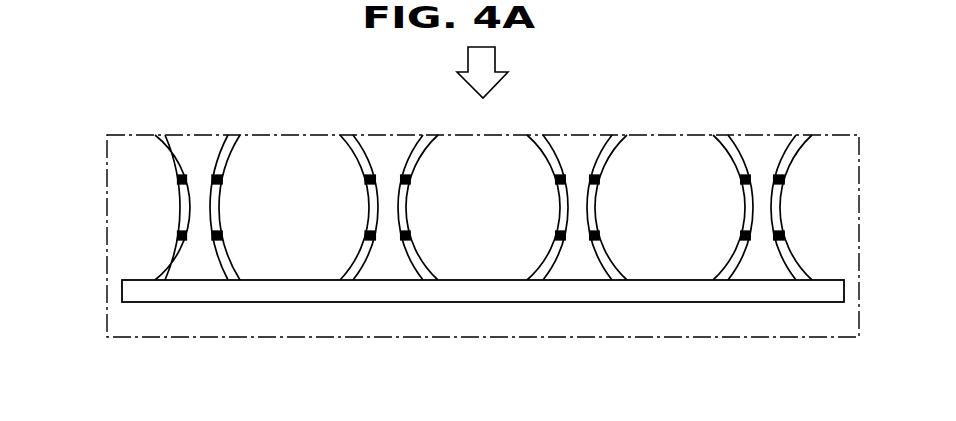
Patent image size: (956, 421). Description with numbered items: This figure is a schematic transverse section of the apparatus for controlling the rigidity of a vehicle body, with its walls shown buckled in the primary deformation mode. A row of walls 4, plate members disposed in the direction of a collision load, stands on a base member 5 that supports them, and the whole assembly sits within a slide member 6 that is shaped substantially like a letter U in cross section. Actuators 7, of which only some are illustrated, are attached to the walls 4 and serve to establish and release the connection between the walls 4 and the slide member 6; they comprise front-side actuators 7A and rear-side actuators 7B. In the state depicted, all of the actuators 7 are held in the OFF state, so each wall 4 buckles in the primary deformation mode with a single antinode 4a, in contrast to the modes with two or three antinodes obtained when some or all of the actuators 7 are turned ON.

The wall 4 is at (242, 152).
The antinode 4a is at (208, 192).
The base member 5 is at (757, 292).
The slide member 6 is at (578, 337).
The actuator 7 is at (407, 213).
The front-side actuator 7A is at (180, 180).
The rear-side actuator 7B is at (179, 237).